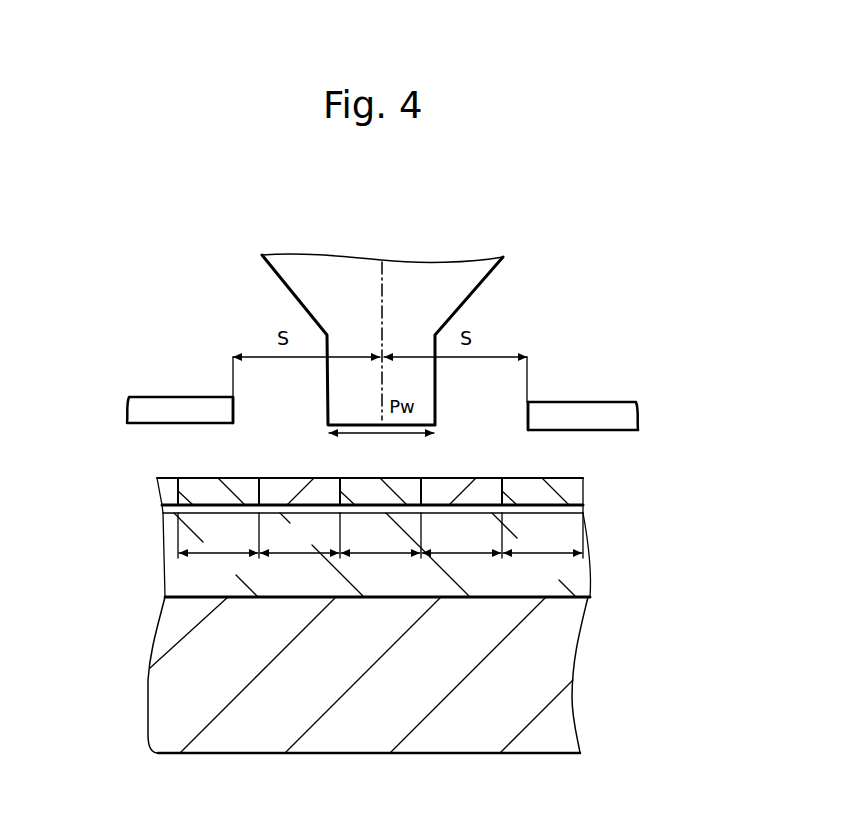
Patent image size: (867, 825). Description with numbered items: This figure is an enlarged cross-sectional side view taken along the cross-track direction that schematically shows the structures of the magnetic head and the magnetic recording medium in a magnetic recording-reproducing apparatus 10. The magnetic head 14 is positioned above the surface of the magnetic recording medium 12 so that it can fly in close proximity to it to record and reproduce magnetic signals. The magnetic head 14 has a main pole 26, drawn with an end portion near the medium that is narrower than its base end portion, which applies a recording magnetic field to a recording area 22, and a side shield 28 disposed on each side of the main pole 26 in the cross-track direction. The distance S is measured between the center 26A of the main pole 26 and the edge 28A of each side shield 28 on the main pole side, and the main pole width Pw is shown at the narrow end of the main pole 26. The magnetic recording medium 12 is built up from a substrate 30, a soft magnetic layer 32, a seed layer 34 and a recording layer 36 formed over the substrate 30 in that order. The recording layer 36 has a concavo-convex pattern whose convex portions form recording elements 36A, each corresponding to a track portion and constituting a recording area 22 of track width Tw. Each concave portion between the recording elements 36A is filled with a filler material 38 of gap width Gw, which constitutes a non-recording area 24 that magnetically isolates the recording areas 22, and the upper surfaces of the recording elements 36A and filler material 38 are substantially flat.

The magnetic recording-reproducing apparatus 10 is at (389, 208).
The magnetic recording medium 12 is at (98, 572).
The magnetic head 14 is at (150, 304).
The recording area 22 is at (178, 463).
The non-recording area 24 is at (259, 463).
The main pole 26 is at (327, 392).
The center of the main pole 26A is at (382, 280).
The side shield 28 is at (185, 397).
The edge of the side shield 28A is at (234, 414).
The substrate 30 is at (579, 676).
The soft magnetic layer 32 is at (590, 567).
The seed layer 34 is at (584, 513).
The recording layer 36 is at (594, 495).
The recording element 36A is at (214, 507).
The filler material 38 is at (286, 511).